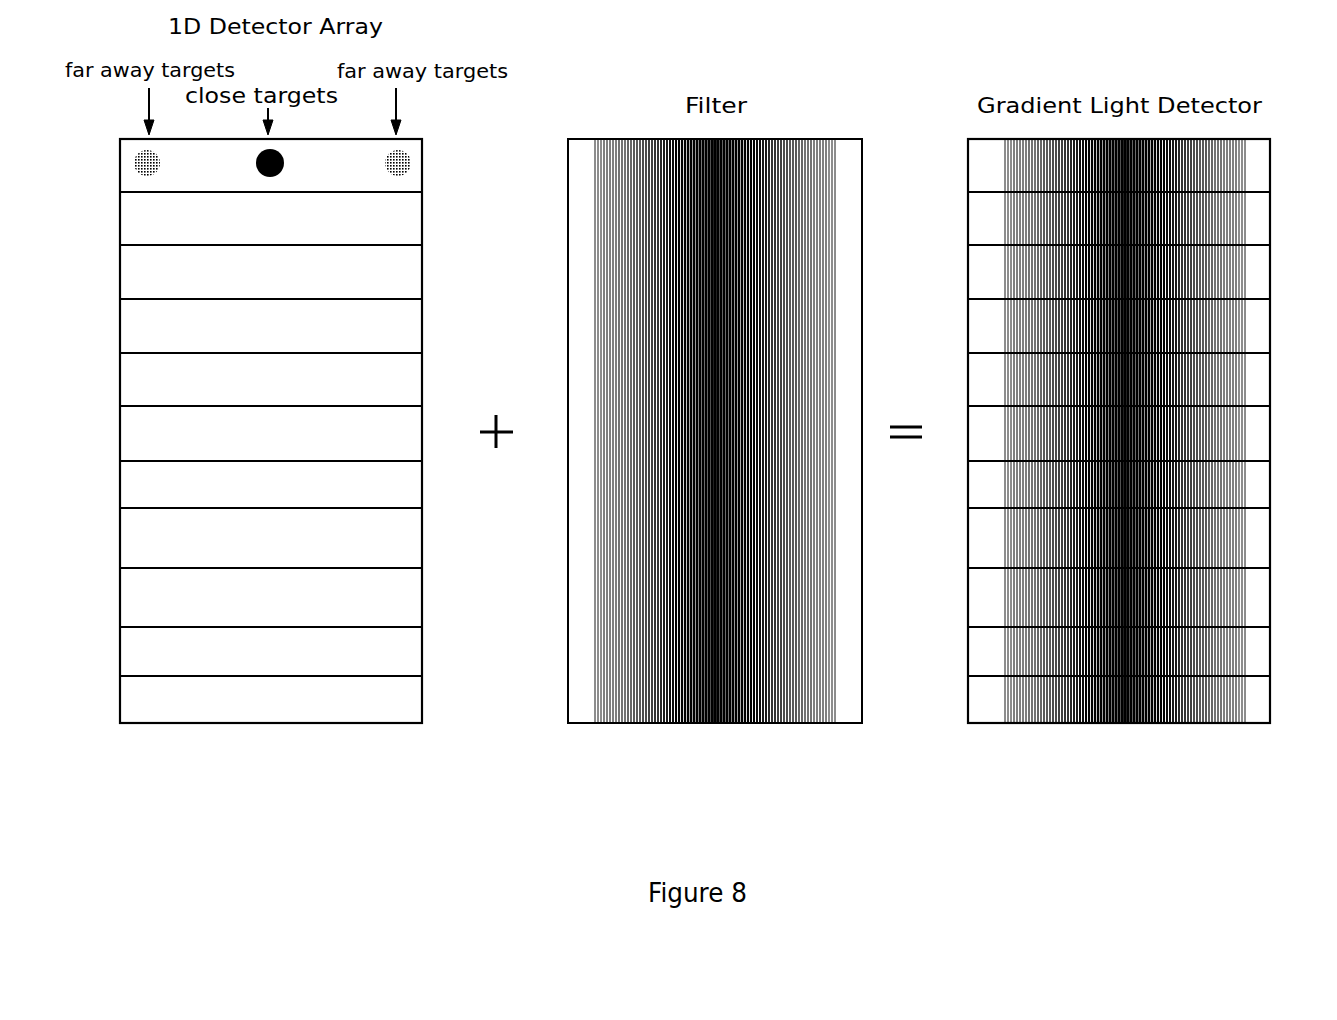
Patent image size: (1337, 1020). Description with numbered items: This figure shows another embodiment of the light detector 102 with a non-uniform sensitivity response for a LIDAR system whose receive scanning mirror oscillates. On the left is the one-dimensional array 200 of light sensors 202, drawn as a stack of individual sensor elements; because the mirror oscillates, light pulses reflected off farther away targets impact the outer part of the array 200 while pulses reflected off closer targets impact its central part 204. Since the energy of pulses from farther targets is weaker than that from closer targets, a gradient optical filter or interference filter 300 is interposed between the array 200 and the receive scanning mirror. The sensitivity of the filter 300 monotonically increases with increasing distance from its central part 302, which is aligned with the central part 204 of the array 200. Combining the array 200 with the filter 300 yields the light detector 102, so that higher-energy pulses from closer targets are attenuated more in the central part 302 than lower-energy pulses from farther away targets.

The array of light sensors 200 is at (118, 429).
The light sensors 202 is at (236, 715).
The central part of the array 204 is at (220, 733).
The gradient optical filter 300 is at (862, 216).
The central part of the filter 302 is at (678, 728).
The light detector 102 is at (1272, 222).